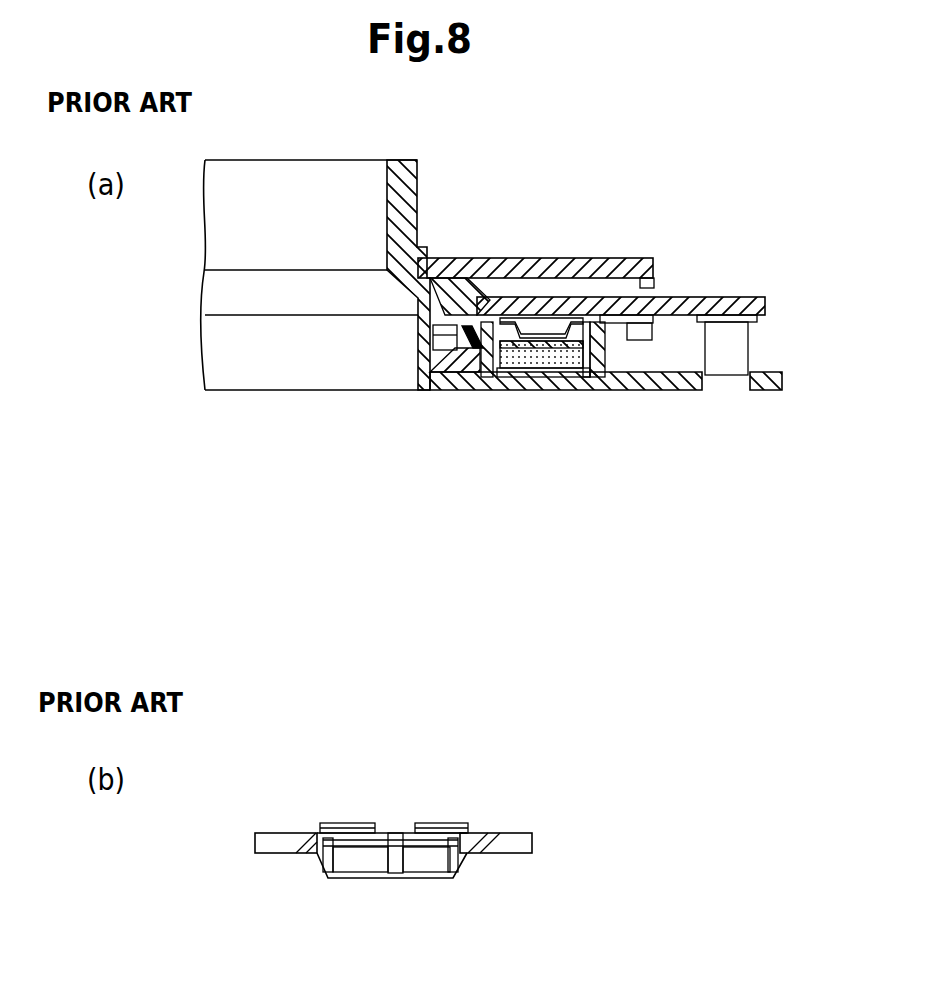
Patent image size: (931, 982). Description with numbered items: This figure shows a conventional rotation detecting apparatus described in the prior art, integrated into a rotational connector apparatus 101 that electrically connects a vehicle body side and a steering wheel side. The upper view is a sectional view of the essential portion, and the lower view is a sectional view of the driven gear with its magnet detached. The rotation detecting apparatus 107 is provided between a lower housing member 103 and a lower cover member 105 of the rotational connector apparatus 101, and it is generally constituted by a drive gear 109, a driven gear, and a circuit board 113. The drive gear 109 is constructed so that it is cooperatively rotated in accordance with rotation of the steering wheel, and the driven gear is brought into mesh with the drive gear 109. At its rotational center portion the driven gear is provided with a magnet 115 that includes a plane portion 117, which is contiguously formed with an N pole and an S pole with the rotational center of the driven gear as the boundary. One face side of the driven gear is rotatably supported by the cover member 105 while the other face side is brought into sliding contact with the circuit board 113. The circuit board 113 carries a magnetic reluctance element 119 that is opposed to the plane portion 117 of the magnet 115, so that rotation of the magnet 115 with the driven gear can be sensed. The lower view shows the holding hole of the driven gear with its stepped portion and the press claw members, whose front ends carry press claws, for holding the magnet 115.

The rotational connector apparatus 101 is at (446, 166).
The lower housing member 103 is at (590, 258).
The lower cover member 105 is at (682, 390).
The rotation detecting apparatus 107 is at (664, 314).
The drive gear 109 is at (447, 390).
The circuit board 113 is at (765, 303).
The magnet 115 is at (517, 390).
The plane portion 117 is at (497, 260).
The magnetic reluctance element 119 is at (541, 318).